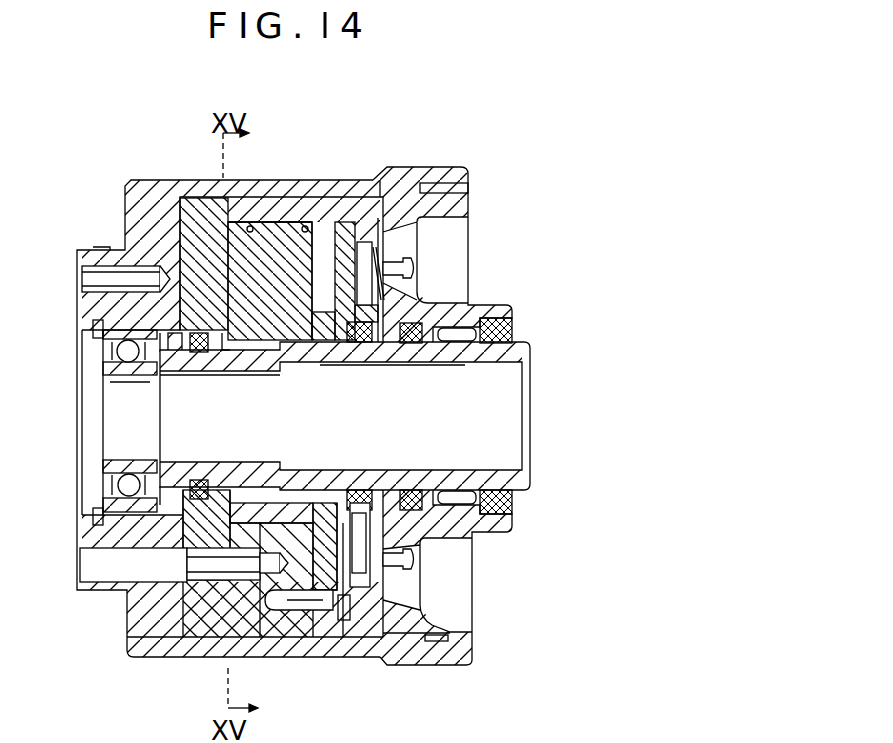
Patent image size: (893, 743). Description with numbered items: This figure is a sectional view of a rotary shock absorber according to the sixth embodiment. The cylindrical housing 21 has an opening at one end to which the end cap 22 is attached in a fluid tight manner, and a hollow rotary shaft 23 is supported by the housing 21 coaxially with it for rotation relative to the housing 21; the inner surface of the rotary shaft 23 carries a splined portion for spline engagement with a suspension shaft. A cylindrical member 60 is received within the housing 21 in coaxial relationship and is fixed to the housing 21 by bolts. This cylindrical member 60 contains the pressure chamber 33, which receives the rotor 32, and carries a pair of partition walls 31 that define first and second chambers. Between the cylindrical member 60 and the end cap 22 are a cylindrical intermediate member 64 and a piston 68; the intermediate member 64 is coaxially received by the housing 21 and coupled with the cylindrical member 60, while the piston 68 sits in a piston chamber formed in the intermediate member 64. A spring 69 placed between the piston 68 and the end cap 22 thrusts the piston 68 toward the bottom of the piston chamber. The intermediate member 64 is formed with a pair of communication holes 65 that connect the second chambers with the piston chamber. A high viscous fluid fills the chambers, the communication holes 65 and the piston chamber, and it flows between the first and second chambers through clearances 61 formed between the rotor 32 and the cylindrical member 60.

The cylindrical housing 21 is at (300, 650).
The end cap 22 is at (410, 593).
The hollow rotary shaft 23 is at (512, 482).
The partition walls 31 is at (177, 660).
The rotor 32 is at (272, 223).
The pressure chamber 33 is at (255, 225).
The cylindrical member 60 is at (215, 195).
The clearances 61 is at (227, 247).
The cylindrical intermediate member 64 is at (348, 620).
The communication holes 65 is at (308, 225).
The piston 68 is at (345, 200).
The spring 69 is at (417, 238).